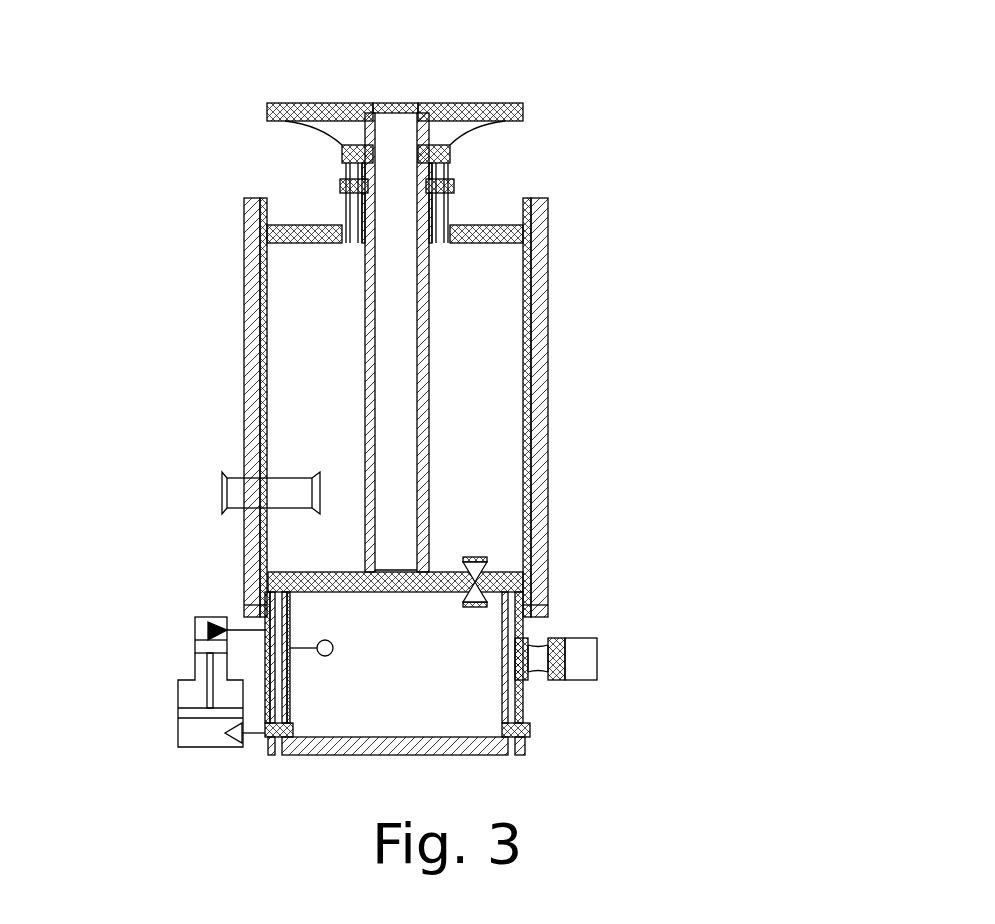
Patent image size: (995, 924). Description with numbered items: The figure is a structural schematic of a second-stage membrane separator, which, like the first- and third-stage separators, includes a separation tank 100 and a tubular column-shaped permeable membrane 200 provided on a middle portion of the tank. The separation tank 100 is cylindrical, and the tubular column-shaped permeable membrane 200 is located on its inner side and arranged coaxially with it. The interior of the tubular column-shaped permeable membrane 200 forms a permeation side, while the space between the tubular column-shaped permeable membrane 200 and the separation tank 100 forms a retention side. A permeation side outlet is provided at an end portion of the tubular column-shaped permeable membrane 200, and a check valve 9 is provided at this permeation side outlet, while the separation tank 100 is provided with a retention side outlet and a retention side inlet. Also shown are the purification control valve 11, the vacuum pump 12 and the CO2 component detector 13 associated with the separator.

The check valve 9 is at (412, 105).
The separation tank 100 is at (537, 337).
The tubular column-shaped permeable membrane 200 is at (429, 388).
The purification control valve 11 is at (480, 588).
The CO2 component detector 13 is at (318, 643).
The vacuum pump 12 is at (212, 695).